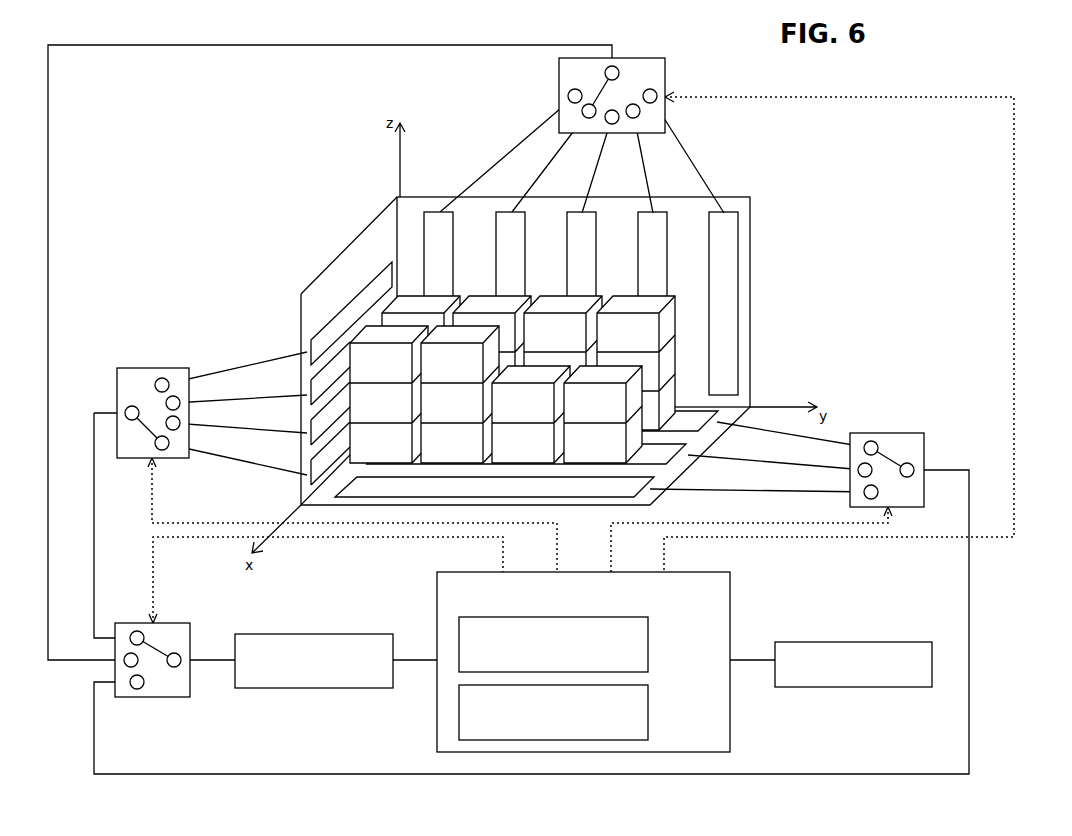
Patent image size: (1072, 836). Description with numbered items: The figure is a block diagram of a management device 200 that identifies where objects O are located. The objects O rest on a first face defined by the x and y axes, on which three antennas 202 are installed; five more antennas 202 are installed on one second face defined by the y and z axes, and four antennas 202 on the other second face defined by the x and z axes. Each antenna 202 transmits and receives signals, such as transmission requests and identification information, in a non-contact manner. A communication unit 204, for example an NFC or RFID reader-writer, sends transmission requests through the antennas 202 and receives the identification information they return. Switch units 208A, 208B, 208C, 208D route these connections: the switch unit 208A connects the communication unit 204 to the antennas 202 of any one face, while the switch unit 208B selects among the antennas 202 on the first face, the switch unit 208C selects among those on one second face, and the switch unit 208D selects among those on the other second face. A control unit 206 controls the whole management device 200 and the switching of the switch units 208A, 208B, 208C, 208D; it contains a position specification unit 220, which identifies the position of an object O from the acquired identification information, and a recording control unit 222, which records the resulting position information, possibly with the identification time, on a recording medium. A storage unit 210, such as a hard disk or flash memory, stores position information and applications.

The management device 200 is at (1061, 63).
The antenna 202 is at (685, 504).
The communication unit 204 is at (310, 634).
The control unit 206 is at (730, 590).
The switch unit 208A is at (180, 623).
The switch unit 208B is at (886, 433).
The switch unit 208C is at (666, 66).
The switch unit 208D is at (152, 368).
The storage unit 210 is at (852, 642).
The position specification unit 220 is at (650, 645).
The recording control unit 222 is at (650, 712).
The object O is at (739, 313).